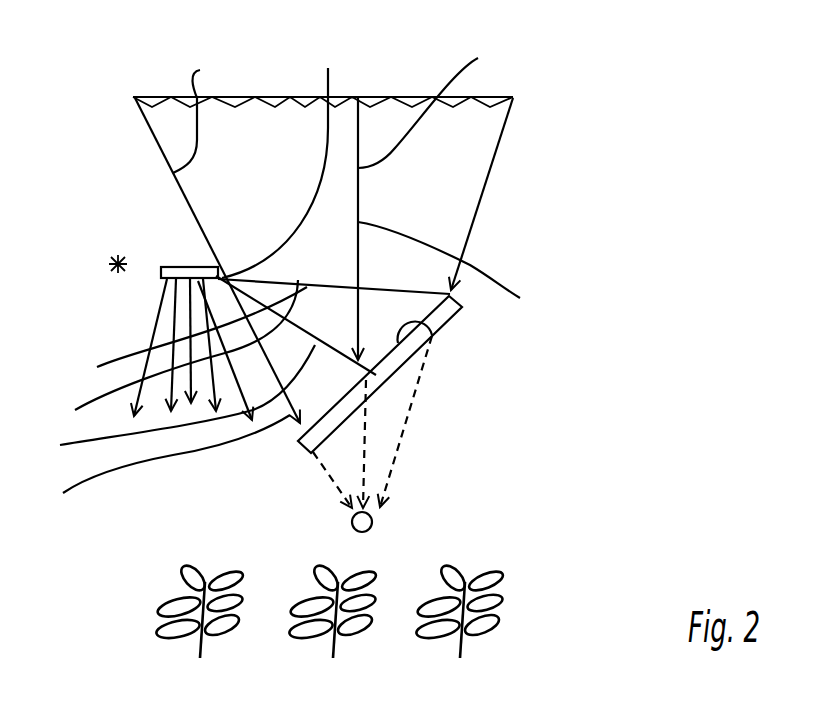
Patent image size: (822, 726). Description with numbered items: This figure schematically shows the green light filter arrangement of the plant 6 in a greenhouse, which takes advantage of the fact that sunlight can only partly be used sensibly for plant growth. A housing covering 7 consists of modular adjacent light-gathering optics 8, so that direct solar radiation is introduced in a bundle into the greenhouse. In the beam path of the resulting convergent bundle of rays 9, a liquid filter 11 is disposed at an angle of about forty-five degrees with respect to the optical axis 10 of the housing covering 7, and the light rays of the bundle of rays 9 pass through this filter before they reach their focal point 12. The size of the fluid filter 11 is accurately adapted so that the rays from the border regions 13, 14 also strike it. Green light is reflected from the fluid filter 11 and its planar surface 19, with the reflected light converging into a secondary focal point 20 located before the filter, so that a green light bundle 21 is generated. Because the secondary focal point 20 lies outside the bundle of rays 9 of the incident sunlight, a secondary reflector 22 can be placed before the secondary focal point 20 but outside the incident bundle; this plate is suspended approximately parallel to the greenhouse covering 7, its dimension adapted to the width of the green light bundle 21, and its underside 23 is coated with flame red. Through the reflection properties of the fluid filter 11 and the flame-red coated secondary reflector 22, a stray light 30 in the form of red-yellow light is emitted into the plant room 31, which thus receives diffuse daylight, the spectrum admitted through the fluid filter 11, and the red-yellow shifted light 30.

The plant 6 is at (585, 122).
The housing covering 7 is at (372, 95).
The light-gathering optics 8 is at (291, 97).
The bundle of rays 9 is at (542, 207).
The optical axis 10 is at (458, 267).
The liquid filter 11 is at (455, 317).
The focal point 12 is at (372, 526).
The border region 13 is at (150, 94).
The border region 14 is at (514, 95).
The planar surface 19 is at (438, 337).
The secondary focal point 20 is at (120, 276).
The green light bundle 21 is at (167, 393).
The secondary reflector 22 is at (183, 266).
The underside 23 is at (281, 158).
The stray light 30 is at (177, 340).
The plant room 31 is at (292, 582).